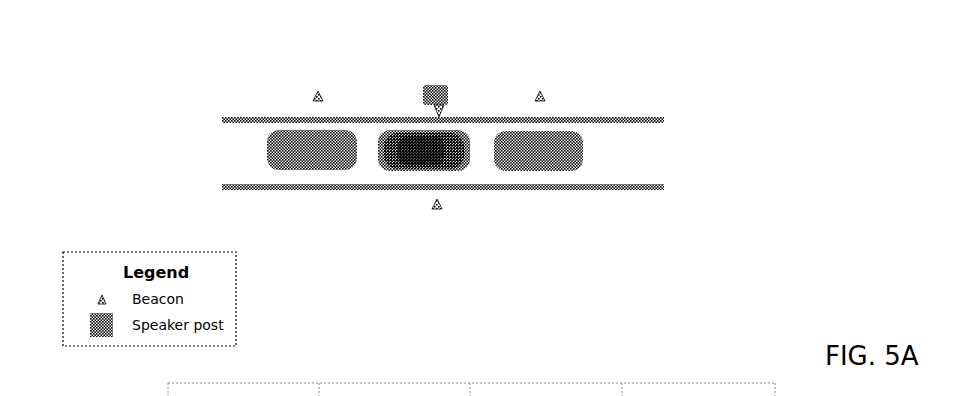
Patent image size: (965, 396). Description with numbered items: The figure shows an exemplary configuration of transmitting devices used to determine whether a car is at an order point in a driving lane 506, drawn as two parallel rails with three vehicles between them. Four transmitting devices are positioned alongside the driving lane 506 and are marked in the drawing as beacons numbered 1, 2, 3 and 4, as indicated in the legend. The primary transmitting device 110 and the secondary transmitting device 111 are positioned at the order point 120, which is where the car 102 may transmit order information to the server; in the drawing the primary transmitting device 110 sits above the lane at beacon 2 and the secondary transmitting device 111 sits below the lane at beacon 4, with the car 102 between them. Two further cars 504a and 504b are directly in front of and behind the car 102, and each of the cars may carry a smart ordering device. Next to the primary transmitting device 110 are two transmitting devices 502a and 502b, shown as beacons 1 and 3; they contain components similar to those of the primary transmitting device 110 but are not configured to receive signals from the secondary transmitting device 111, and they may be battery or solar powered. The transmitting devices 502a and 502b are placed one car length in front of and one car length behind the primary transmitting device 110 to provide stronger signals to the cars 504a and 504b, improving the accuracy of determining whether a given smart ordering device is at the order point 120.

The car 102 is at (410, 122).
The primary transmitting device 110 is at (440, 85).
The secondary transmitting device 111 is at (439, 235).
The order point 120 is at (455, 118).
The transmitting device 502a is at (545, 75).
The transmitting device 502b is at (313, 72).
The car 504a is at (540, 172).
The car 504b is at (301, 171).
The driving lane 506 is at (666, 187).
The beacon identifier 1 is at (558, 96).
The beacon identifier 2 is at (449, 102).
The beacon identifier 3 is at (332, 95).
The beacon identifier 4 is at (454, 205).